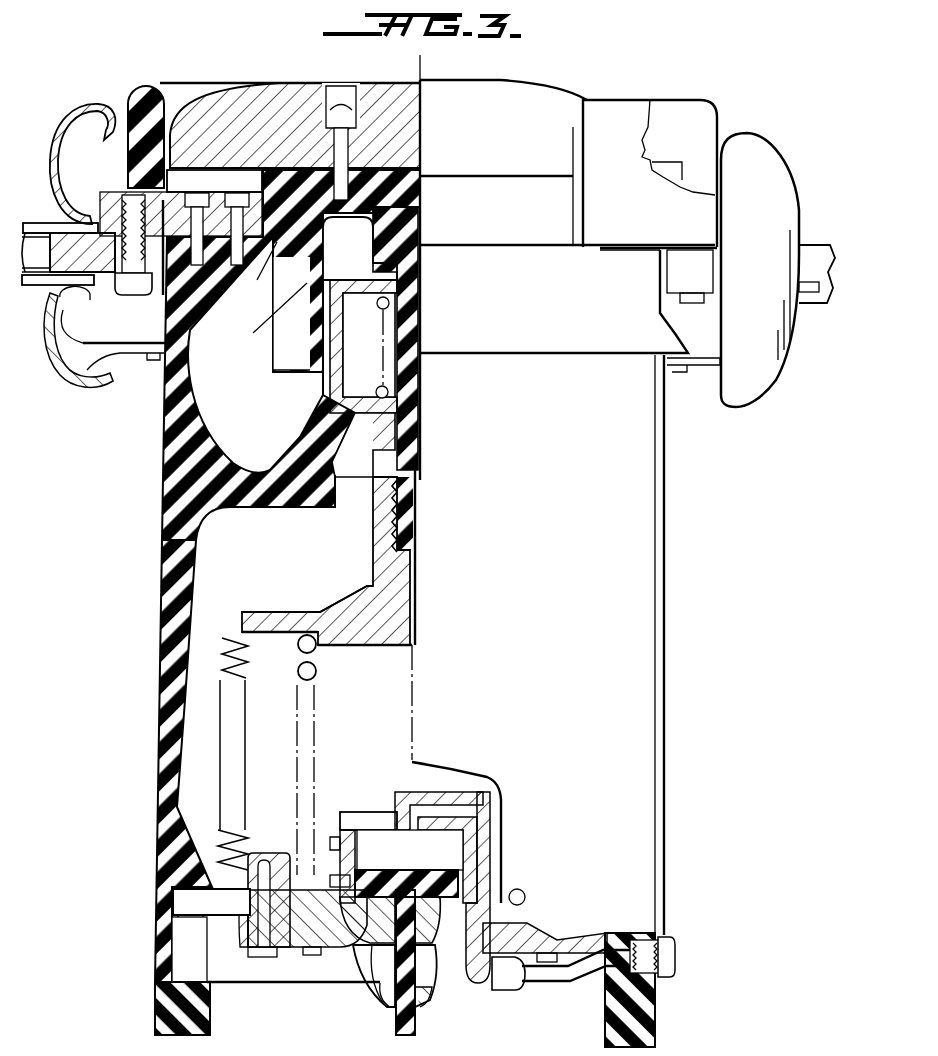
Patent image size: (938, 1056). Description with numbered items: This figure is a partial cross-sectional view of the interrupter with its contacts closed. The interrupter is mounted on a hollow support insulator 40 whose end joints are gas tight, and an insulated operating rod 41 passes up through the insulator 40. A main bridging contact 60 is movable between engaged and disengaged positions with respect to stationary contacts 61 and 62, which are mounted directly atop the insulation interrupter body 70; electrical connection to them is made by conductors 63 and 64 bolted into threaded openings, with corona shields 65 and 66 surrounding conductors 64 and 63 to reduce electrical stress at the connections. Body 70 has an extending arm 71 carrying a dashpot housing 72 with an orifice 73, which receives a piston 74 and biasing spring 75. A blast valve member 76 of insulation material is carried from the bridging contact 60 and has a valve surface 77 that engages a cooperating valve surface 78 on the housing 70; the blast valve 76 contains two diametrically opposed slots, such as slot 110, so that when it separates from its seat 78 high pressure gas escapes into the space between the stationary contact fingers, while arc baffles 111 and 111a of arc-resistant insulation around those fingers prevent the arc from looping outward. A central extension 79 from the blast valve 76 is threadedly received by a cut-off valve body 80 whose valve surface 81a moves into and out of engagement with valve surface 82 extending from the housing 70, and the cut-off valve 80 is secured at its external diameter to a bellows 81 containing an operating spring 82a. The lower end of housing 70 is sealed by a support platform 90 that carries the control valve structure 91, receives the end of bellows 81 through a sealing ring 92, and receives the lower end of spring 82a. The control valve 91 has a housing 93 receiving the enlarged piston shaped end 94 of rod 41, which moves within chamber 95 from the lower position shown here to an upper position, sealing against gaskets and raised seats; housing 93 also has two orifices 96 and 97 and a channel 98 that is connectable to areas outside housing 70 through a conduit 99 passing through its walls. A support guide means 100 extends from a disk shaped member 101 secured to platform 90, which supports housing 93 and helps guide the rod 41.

The hollow support insulator 40 is at (178, 1004).
The insulated operating rod 41 is at (415, 1023).
The main bridging contact 60 is at (553, 103).
The stationary contact 61 is at (672, 172).
The stationary contact 62 is at (195, 176).
The conductor 63 is at (821, 254).
The conductor 64 is at (45, 292).
The corona shield 65 is at (105, 112).
The corona shield 66 is at (773, 155).
The insulation interrupter body 70 is at (163, 692).
The extending arm 71 is at (303, 434).
The dashpot housing 72 is at (323, 377).
The orifice 73 is at (369, 345).
The piston 74 is at (368, 420).
The biasing spring 75 is at (395, 390).
The blast valve member 76 is at (400, 193).
The valve surface 77 is at (320, 298).
The cooperating valve surface 78 is at (258, 275).
The central extension 79 is at (410, 318).
The cut-off valve body 80 is at (398, 594).
The bellows 81 is at (248, 672).
The valve surface 81a is at (320, 603).
The valve surface 82 is at (337, 505).
The operating spring 82a is at (318, 672).
The support platform 90 is at (195, 903).
The control valve structure 91 is at (394, 763).
The sealing ring 92 is at (284, 858).
The housing 93 is at (373, 811).
The enlarged piston shaped end 94 is at (409, 863).
The chamber 95 is at (447, 853).
The orifice 96 is at (338, 840).
The orifice 97 is at (331, 879).
The channel 98 is at (475, 830).
The conduit 99 is at (543, 980).
The support guide means 100 is at (383, 1000).
The disk shaped member 101 is at (343, 947).
The slot 110 is at (266, 313).
The arc baffle 111 is at (160, 79).
The arc baffle 111a is at (627, 110).